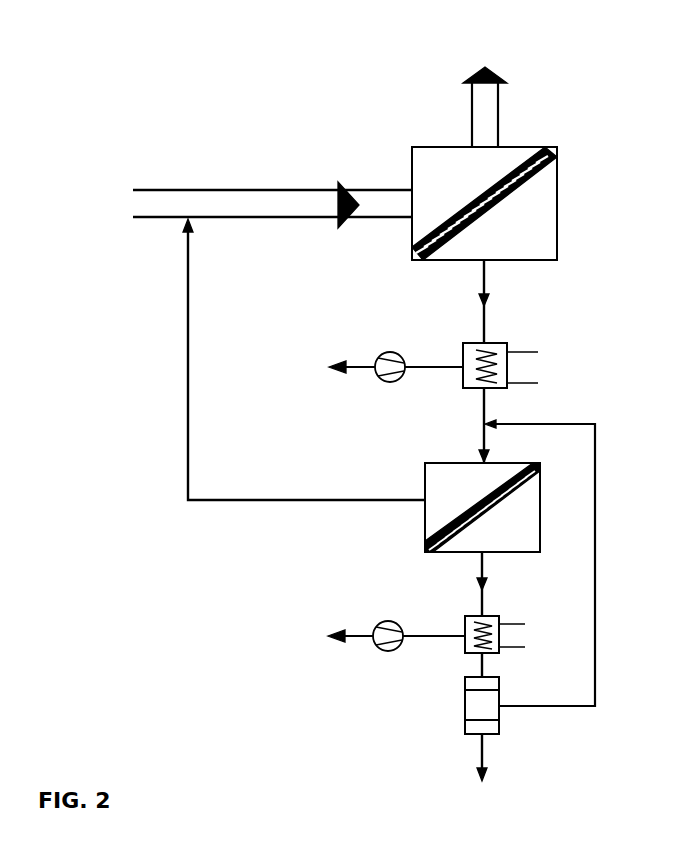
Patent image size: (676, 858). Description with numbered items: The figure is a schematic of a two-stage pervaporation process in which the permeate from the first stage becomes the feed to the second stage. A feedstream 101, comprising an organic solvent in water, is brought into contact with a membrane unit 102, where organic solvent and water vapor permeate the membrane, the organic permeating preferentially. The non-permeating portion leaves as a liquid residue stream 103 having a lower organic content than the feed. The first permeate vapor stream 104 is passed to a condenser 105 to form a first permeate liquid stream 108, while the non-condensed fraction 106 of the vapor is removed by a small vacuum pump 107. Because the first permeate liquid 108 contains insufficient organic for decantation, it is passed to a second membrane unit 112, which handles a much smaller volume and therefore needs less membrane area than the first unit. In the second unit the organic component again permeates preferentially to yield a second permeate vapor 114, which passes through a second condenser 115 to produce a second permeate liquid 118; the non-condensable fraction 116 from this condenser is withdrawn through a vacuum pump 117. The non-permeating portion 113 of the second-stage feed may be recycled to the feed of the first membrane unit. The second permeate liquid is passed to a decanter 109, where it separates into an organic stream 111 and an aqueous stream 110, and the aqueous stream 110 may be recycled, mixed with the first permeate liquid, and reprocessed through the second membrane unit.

The feedstream 101 is at (272, 190).
The membrane unit 102 is at (484, 203).
The liquid residue stream 103 is at (483, 94).
The first permeate vapor stream 104 is at (462, 301).
The condenser 105 is at (509, 365).
The non-condensed fraction 106 is at (329, 367).
The vacuum pump 107 is at (417, 380).
The first permeate liquid stream 108 is at (462, 425).
The decanter 109 is at (457, 707).
The aqueous stream 110 is at (540, 577).
The organic stream 111 is at (483, 771).
The second membrane unit 112 is at (482, 507).
The non-permeating portion 113 is at (304, 359).
The second permeate vapor 114 is at (460, 584).
The second condenser 115 is at (505, 634).
The non-condensable fraction 116 is at (326, 636).
The vacuum pump 117 is at (416, 623).
The second permeate liquid 118 is at (457, 665).